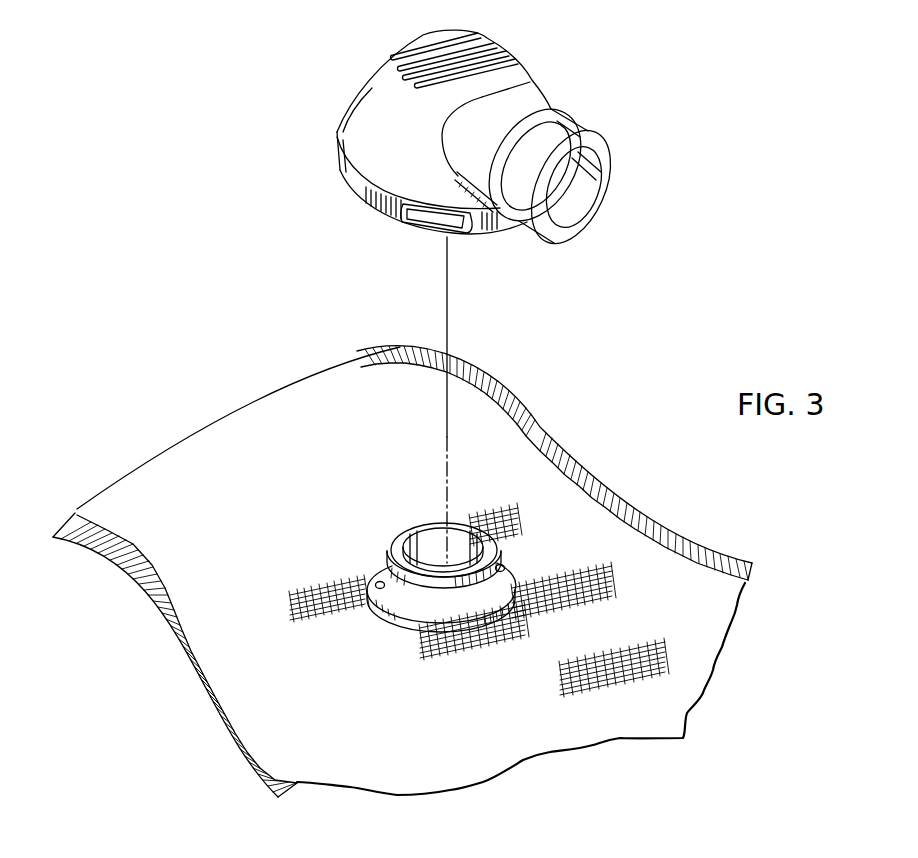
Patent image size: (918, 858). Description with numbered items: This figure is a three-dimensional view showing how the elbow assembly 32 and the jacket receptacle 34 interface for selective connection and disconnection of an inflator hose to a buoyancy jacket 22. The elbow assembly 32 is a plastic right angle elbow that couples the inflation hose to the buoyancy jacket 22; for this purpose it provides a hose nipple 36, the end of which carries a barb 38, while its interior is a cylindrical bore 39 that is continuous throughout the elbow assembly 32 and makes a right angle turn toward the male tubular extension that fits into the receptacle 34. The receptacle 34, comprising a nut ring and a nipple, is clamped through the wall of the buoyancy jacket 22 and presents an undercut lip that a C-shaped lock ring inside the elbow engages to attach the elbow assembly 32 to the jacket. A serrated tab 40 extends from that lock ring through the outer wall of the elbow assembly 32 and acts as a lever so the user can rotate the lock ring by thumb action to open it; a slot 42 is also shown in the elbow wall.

The buoyancy jacket 22 is at (203, 470).
The elbow assembly 32 is at (399, 164).
The receptacle 34 is at (413, 600).
The hose nipple 36 is at (552, 143).
The barb 38 is at (600, 148).
The cylindrical bore 39 is at (566, 212).
The tab 40 is at (377, 207).
The slot 42 is at (430, 227).